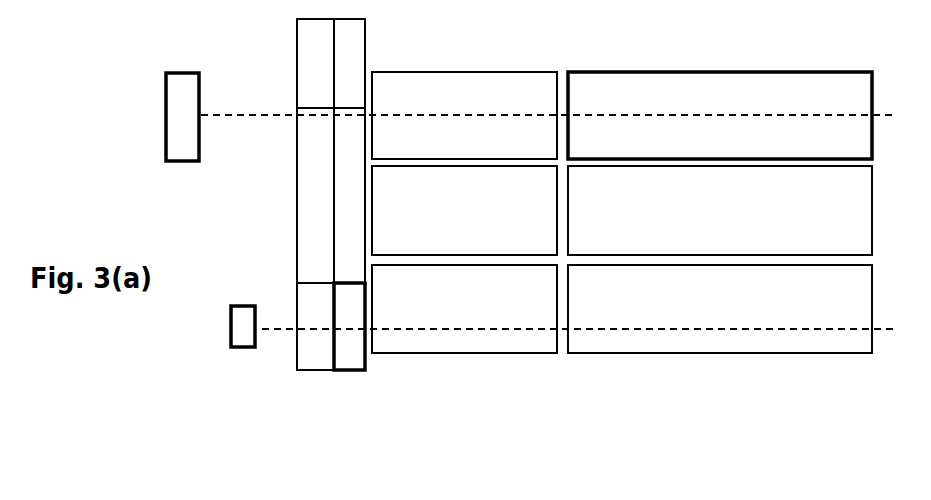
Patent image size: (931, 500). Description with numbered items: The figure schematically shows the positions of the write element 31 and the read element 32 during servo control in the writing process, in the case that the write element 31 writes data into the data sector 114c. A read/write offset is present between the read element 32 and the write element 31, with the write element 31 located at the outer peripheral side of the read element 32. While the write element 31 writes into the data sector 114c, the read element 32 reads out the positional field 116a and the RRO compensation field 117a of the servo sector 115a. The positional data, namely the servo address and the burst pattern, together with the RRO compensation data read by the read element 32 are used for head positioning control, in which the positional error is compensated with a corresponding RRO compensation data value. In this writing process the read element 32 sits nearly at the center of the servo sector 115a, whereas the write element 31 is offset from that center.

The write element 31 is at (182, 72).
The read element 32 is at (243, 348).
The data sector 114c is at (623, 72).
The servo sector 115a is at (368, 434).
The positional field 116a is at (315, 372).
The RRO compensation field 117a is at (347, 373).